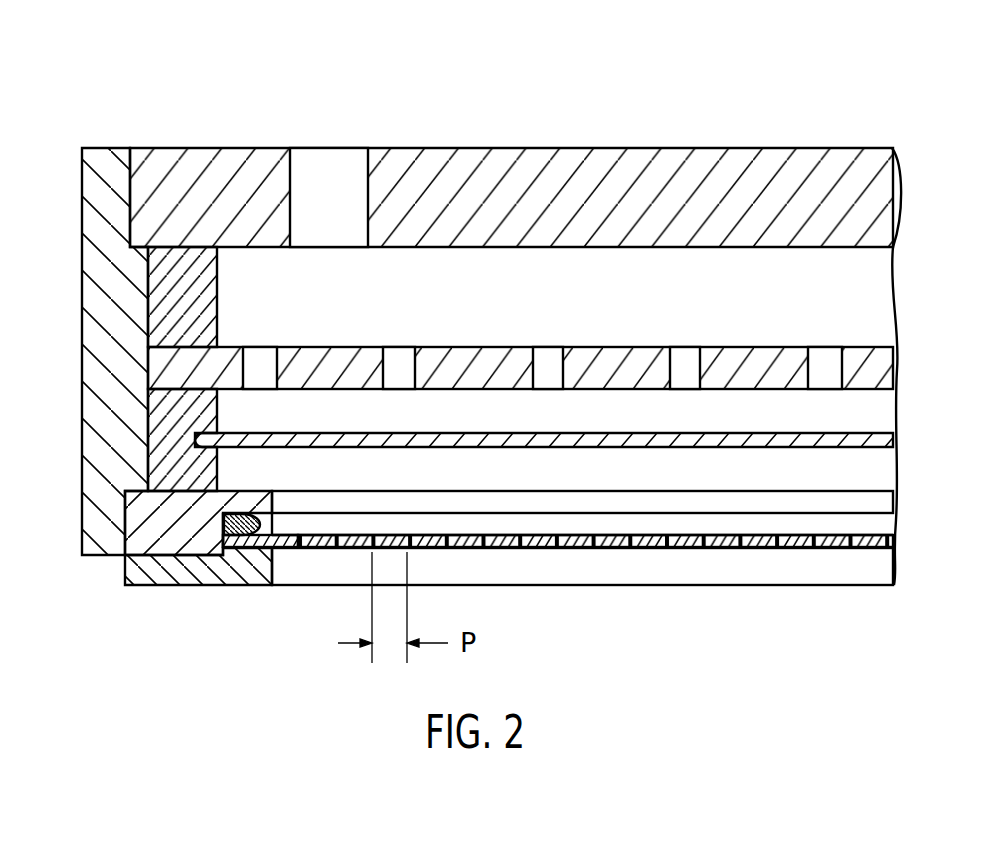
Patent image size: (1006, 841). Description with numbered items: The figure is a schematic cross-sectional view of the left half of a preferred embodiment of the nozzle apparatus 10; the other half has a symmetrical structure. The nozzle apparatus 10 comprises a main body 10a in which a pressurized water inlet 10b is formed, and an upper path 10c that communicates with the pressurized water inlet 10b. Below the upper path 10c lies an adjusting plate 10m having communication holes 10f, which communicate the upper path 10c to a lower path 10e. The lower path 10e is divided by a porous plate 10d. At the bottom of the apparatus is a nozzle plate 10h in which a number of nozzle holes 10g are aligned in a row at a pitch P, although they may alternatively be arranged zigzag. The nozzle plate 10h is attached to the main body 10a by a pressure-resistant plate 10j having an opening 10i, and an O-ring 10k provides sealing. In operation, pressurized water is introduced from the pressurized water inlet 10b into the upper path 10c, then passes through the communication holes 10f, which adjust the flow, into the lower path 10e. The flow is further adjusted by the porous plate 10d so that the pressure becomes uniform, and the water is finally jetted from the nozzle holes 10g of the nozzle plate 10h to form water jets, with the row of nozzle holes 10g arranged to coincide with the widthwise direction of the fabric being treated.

The nozzle apparatus 10 is at (732, 134).
The main body 10a is at (593, 162).
The pressurized water inlet 10b is at (332, 163).
The upper path 10c is at (430, 290).
The porous plate 10d is at (807, 433).
The lower path 10e is at (528, 425).
The communication holes 10f is at (258, 363).
The nozzle holes 10g is at (690, 549).
The nozzle plate 10h is at (745, 549).
The opening 10i is at (336, 568).
The pressure-resistant plate 10j is at (164, 570).
The O-ring 10k is at (248, 540).
The adjusting plate 10m is at (762, 360).